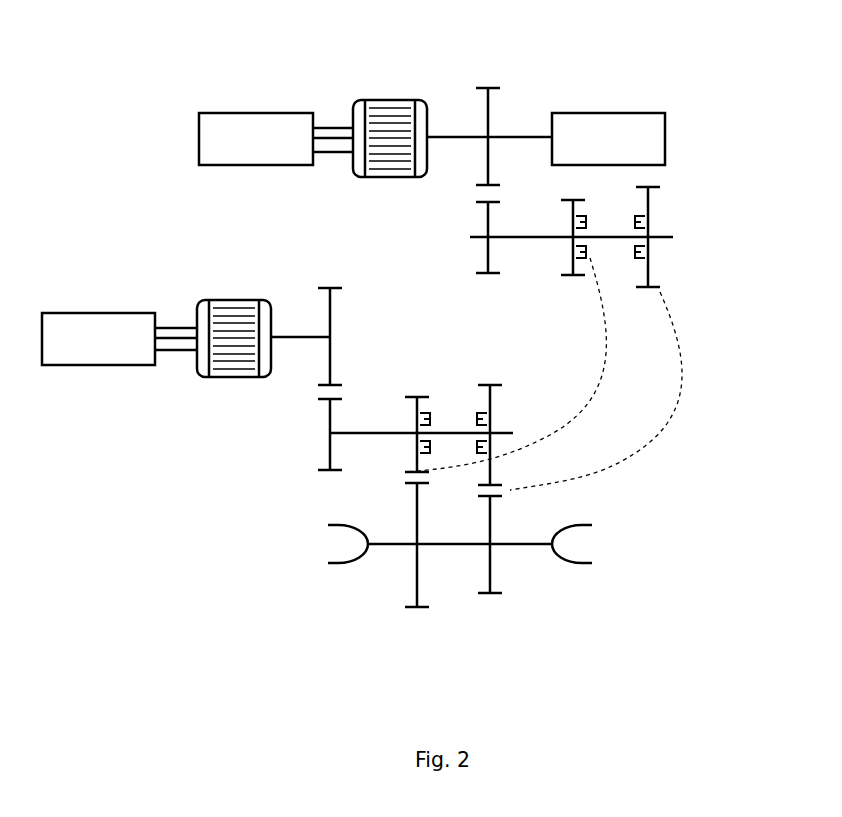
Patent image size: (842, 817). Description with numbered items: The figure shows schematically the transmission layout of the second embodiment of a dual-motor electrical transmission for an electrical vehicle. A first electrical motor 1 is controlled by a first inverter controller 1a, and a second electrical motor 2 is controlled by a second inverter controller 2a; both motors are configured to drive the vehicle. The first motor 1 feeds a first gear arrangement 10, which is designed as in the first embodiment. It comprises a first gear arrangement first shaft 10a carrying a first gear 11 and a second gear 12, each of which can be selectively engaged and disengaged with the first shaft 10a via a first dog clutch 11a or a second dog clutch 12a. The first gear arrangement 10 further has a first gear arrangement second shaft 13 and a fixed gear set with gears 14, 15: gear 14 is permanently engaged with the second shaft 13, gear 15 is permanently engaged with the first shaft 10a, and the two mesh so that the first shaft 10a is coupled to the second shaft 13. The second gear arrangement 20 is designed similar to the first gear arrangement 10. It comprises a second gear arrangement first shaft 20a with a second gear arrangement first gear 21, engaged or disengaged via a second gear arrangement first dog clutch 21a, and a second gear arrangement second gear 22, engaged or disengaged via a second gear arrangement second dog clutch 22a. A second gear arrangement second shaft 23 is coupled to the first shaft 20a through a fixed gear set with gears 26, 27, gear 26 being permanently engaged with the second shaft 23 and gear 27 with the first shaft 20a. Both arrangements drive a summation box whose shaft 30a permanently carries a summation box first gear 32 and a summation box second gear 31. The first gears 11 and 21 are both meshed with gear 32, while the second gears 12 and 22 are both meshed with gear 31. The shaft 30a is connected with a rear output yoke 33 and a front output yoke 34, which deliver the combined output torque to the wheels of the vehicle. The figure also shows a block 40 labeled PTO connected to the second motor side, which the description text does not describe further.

The first electrical motor 1 is at (200, 300).
The first inverter controller 1a is at (100, 312).
The second electrical motor 2 is at (373, 100).
The second inverter controller 2a is at (220, 112).
The first gear arrangement 10 is at (658, 447).
The first gear arrangement first shaft 10a is at (350, 430).
The first gear 11 is at (413, 473).
The first dog clutch 11a is at (430, 427).
The second gear 12 is at (495, 470).
The second dog clutch 12a is at (478, 412).
The first gear arrangement second shaft 13 is at (295, 330).
The fixed gear set gear 14 is at (325, 363).
The fixed gear set gear 15 is at (325, 428).
The second gear arrangement 20 is at (688, 345).
The second gear arrangement first shaft 20a is at (667, 240).
The second gear arrangement first gear 21 is at (580, 200).
The second gear arrangement first dog clutch 21a is at (587, 243).
The second gear arrangement second gear 22 is at (655, 190).
The second gear arrangement second dog clutch 22a is at (650, 267).
The second gear arrangement second shaft 23 is at (463, 135).
The fixed gear set gear 26 is at (490, 120).
The fixed gear set gear 27 is at (480, 228).
The shaft 30a is at (468, 547).
The summation box second gear 31 is at (495, 595).
The summation box first gear 32 is at (408, 608).
The rear output yoke 33 is at (338, 567).
The front output yoke 34 is at (572, 565).
The power take-off PTO (P4) 40 is at (642, 113).